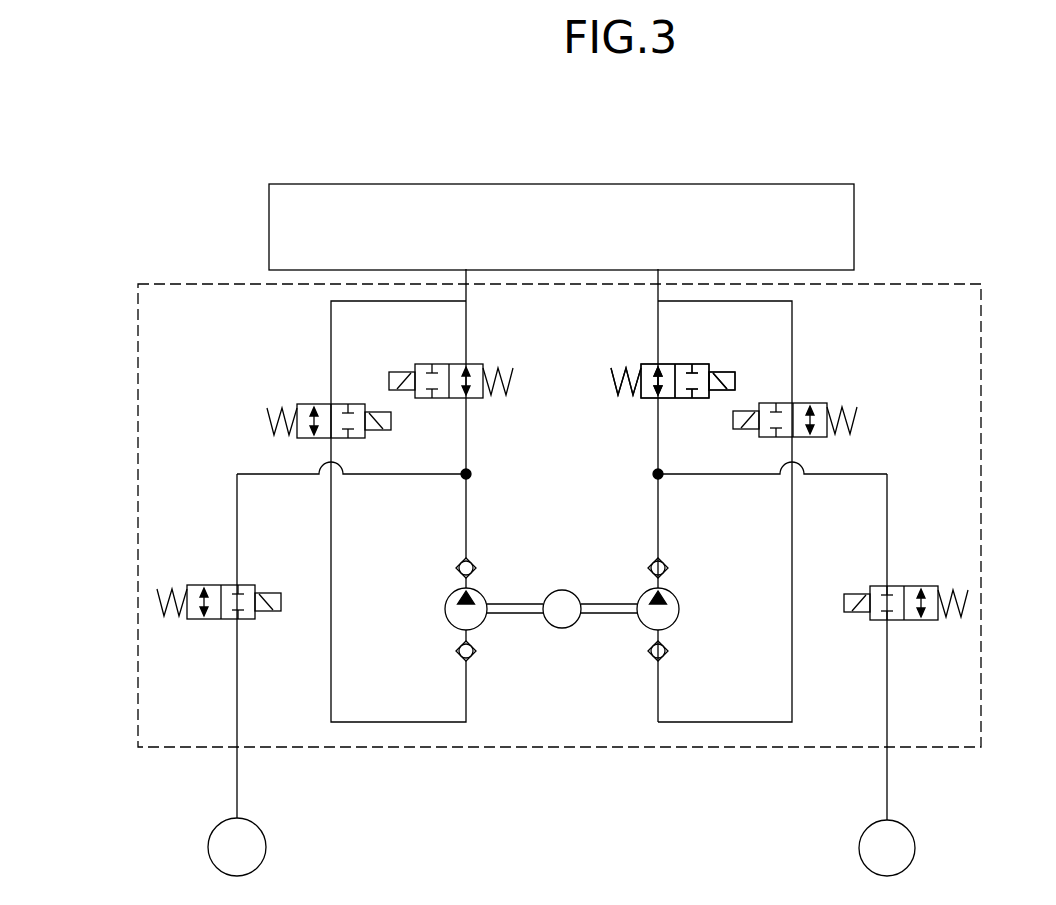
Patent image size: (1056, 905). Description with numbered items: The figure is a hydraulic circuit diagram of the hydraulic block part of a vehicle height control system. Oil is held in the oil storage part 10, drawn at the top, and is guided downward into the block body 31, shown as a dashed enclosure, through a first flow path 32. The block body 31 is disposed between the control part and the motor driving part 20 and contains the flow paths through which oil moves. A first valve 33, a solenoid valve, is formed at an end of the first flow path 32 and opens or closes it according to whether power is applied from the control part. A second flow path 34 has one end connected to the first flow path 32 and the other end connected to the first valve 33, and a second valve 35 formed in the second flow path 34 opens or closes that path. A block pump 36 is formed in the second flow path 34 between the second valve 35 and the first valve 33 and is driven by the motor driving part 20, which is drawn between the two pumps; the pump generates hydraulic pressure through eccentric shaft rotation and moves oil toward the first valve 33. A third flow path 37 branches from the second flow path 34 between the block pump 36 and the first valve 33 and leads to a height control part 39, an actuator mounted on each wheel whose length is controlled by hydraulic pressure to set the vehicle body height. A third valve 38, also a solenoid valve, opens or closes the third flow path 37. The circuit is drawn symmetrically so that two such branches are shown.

The oil storage part 10 is at (712, 184).
The motor driving part 20 is at (562, 628).
The block body 31 is at (938, 283).
The first flow path 32 is at (658, 325).
The first valve 33 is at (690, 398).
The second flow path 34 is at (792, 519).
The second valve 35 is at (822, 403).
The block pump 36 is at (679, 607).
The third flow path 37 is at (887, 697).
The third valve 38 is at (915, 583).
The height control part 39 is at (858, 848).